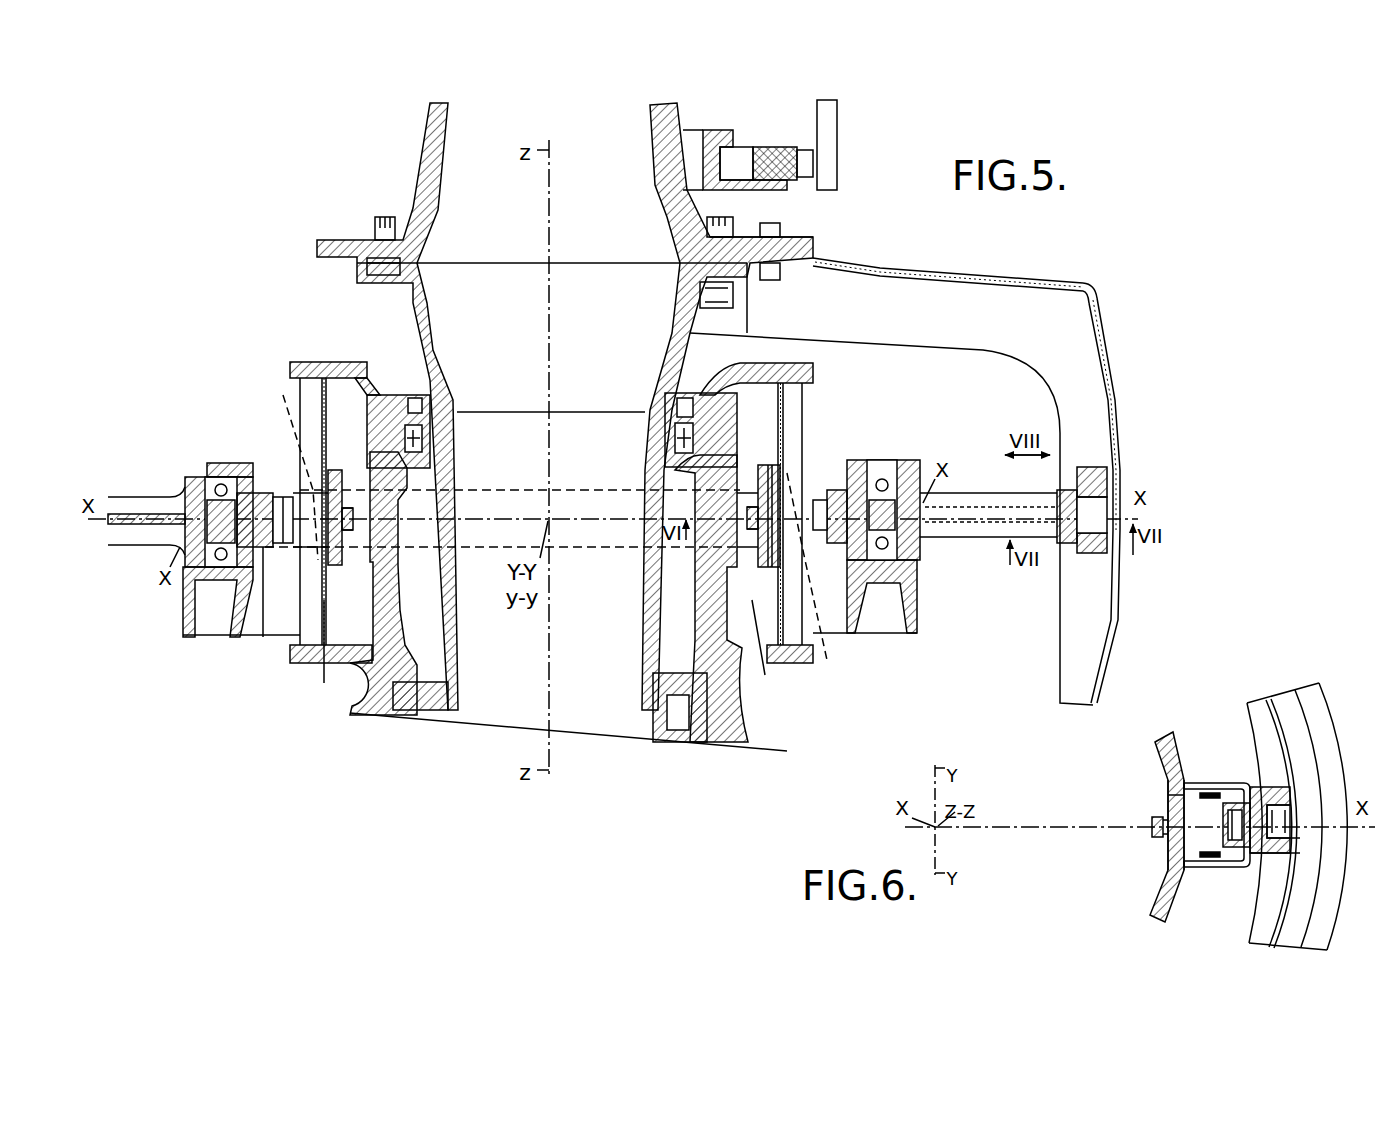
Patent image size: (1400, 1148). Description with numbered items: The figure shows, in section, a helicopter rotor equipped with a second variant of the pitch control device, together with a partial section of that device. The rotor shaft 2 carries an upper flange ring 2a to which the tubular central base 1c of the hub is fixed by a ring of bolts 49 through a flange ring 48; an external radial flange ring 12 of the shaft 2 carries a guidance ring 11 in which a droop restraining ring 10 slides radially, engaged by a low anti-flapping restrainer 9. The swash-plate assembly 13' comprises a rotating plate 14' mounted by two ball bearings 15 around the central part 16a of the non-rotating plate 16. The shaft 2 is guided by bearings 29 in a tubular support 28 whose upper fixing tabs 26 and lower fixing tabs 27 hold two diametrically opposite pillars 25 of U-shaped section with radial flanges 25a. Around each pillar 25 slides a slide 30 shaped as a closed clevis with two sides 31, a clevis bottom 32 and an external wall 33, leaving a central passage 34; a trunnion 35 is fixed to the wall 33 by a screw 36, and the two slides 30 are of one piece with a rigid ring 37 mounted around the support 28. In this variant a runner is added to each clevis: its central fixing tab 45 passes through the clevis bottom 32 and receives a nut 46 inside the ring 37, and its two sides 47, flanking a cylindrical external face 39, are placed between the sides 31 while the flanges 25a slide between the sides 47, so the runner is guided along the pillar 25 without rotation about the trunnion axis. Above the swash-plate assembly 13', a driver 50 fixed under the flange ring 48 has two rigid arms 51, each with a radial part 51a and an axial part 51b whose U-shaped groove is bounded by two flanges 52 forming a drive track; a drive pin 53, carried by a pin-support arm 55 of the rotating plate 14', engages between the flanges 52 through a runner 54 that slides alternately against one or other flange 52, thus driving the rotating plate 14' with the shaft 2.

In FIG. 5, the rotor shaft 2 is at (646, 641).
In FIG. 5, the tubular central base of the hub 1c is at (672, 250).
In FIG. 5, the upper flange ring of the rotor shaft 2a is at (688, 268).
In FIG. 5, the low anti-flapping restrainer 9 is at (830, 175).
In FIG. 5, the droop restraining ring 10 is at (775, 147).
In FIG. 5, the guidance ring 11 is at (760, 187).
In FIG. 5, the external radial flange ring 12 is at (717, 130).
In FIG. 5, the swash-plate assembly 13' is at (909, 473).
In FIG. 5, the rotating plate 14' is at (144, 492).
In FIG. 5, the ball bearings 15 is at (222, 477).
In FIG. 5, the non-rotating plate 16 is at (190, 637).
In FIG. 6, the central part of the non-rotating plate 16a is at (1262, 720).
In FIG. 5, the pillar 25 is at (321, 400).
In FIG. 6, the pillar 25 is at (1190, 866).
In FIG. 6, the radial flanges of the pillar 25a is at (1218, 785).
In FIG. 5, the upper fixing tabs 26 is at (310, 362).
In FIG. 5, the lower fixing tabs 27 is at (300, 663).
In FIG. 5, the tubular support 28 is at (710, 478).
In FIG. 5, the bearings 29 is at (667, 425).
In FIG. 5, the slide 30 is at (330, 475).
In FIG. 6, the slide 30 is at (1230, 870).
In FIG. 6, the sides of the clevis 31 is at (1248, 790).
In FIG. 6, the clevis bottom 32 is at (1170, 857).
In FIG. 6, the external wall 33 is at (1262, 854).
In FIG. 6, the central passage 34 is at (1255, 792).
In FIG. 5, the trunnion 35 is at (263, 637).
In FIG. 6, the trunnion 35 is at (1292, 841).
In FIG. 6, the screw 36 is at (1292, 806).
In FIG. 5, the rigid ring 37 is at (755, 490).
In FIG. 6, the rigid ring 37 is at (1170, 737).
In FIG. 5, the cylindrical external face 39 is at (790, 470).
In FIG. 5, the central fixing tab 45 is at (345, 512).
In FIG. 6, the central fixing tab 45 is at (1155, 822).
In FIG. 5, the nut 46 is at (353, 518).
In FIG. 6, the nut 46 is at (1160, 832).
In FIG. 5, the sides of the runner 47 is at (549, 543).
In FIG. 6, the sides of the runner 47 is at (1205, 793).
In FIG. 5, the flange ring 48 is at (785, 236).
In FIG. 5, the ring of bolts 49 is at (700, 294).
In FIG. 5, the driver 50 is at (1096, 290).
In FIG. 5, the rigid arm 51 is at (1108, 325).
In FIG. 5, the radial arm part 51a is at (935, 272).
In FIG. 5, the axial arm part 51b is at (1112, 632).
In FIG. 5, the flanges of the U-shaped groove 52 is at (1087, 634).
In FIG. 5, the drive pin 53 is at (1102, 470).
In FIG. 5, the runner 54 is at (1095, 553).
In FIG. 5, the pin-support arm 55 is at (975, 537).